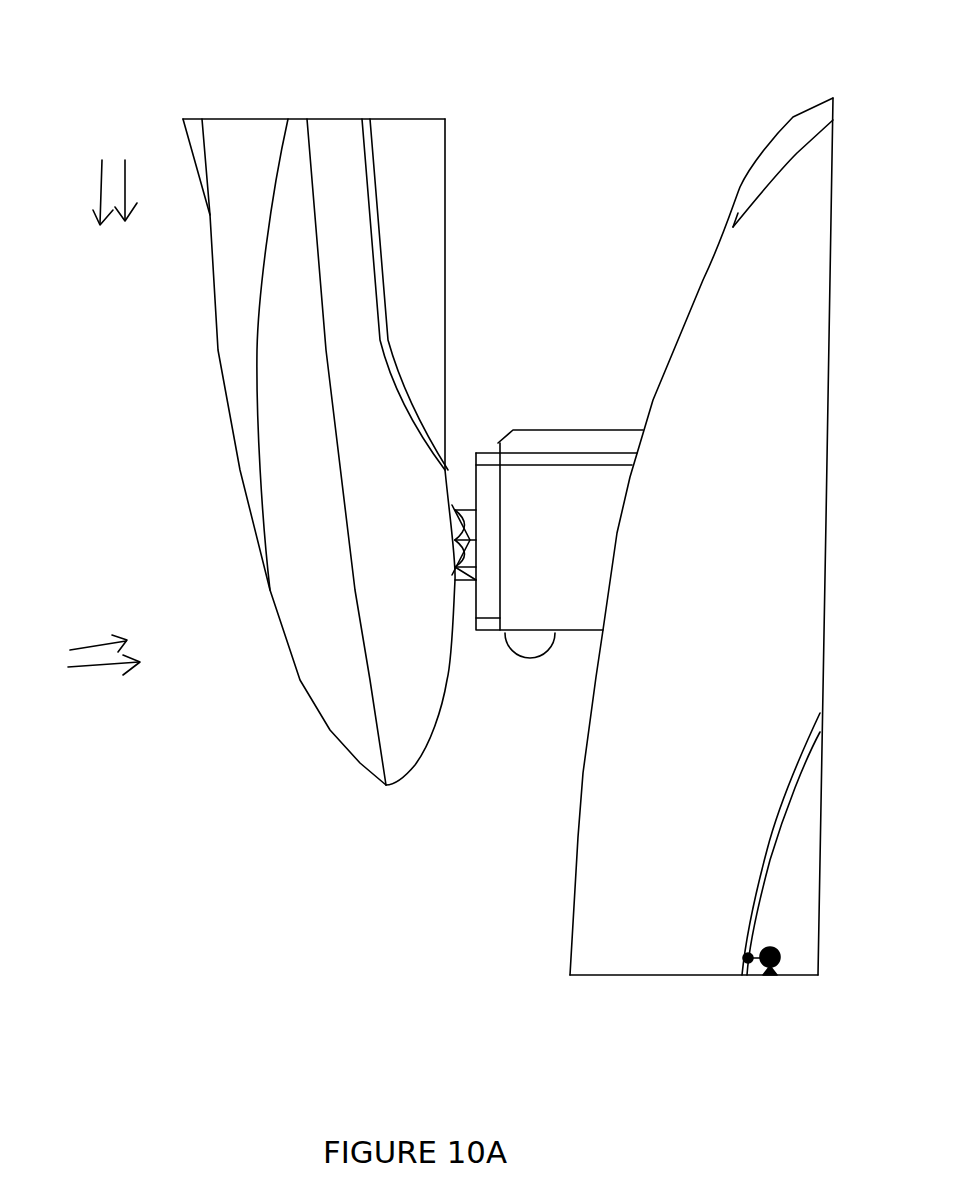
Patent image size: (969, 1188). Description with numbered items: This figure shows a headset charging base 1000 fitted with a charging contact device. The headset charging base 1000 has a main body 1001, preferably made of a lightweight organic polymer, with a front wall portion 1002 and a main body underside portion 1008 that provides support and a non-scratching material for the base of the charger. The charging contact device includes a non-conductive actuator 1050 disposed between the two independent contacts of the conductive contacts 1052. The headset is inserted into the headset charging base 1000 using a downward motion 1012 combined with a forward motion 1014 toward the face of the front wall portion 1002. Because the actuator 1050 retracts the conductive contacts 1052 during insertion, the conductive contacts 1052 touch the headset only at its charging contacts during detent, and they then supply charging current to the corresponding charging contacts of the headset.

The headset charging base 1000 is at (683, 147).
The main body 1001 is at (803, 532).
The front wall portion 1002 is at (585, 773).
The main body underside portion 1008 is at (663, 990).
The downward motion 1012 is at (88, 192).
The forward motion 1014 is at (97, 641).
The non-conductive actuator 1050 is at (463, 500).
The conductive contacts 1052 is at (457, 585).